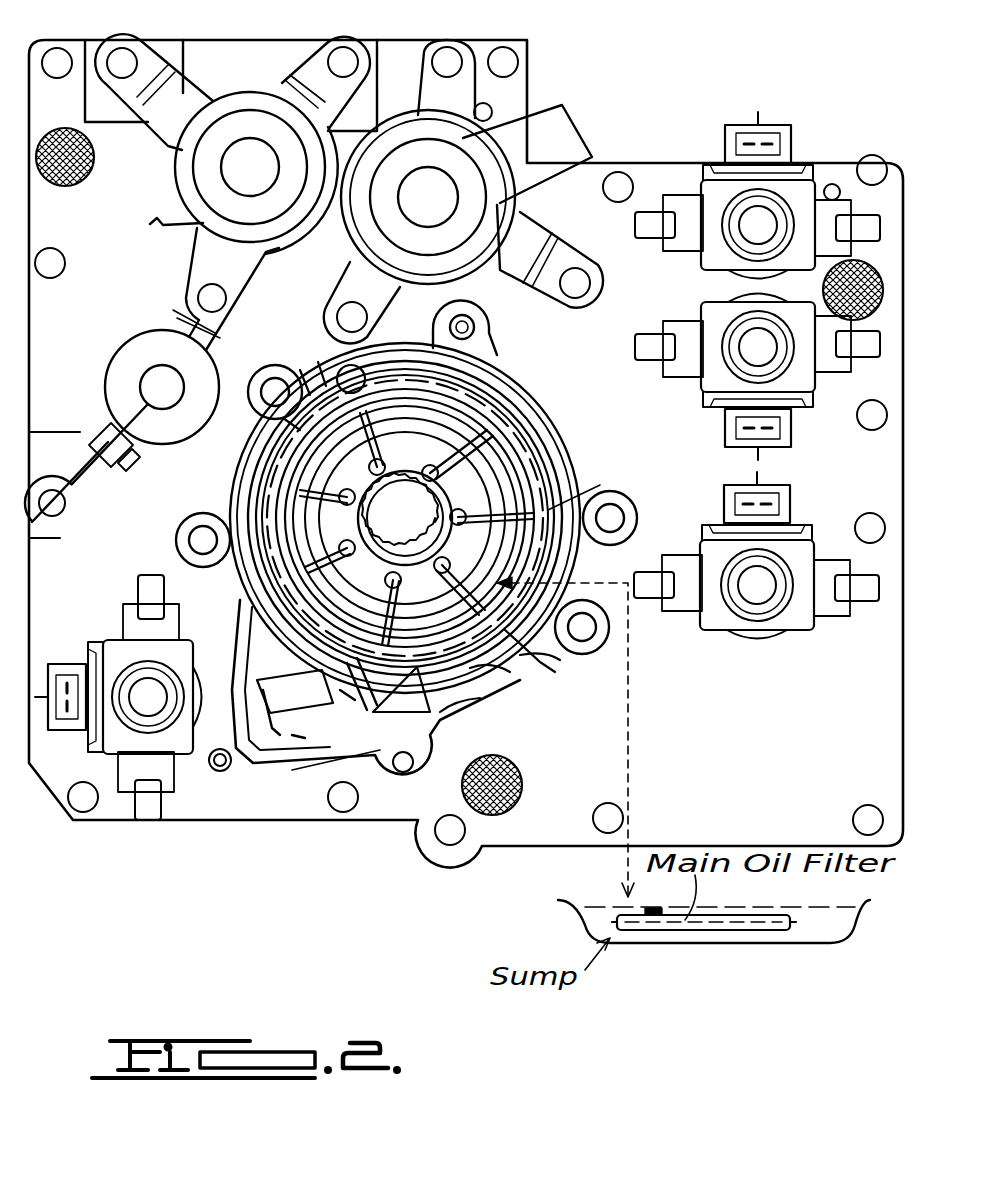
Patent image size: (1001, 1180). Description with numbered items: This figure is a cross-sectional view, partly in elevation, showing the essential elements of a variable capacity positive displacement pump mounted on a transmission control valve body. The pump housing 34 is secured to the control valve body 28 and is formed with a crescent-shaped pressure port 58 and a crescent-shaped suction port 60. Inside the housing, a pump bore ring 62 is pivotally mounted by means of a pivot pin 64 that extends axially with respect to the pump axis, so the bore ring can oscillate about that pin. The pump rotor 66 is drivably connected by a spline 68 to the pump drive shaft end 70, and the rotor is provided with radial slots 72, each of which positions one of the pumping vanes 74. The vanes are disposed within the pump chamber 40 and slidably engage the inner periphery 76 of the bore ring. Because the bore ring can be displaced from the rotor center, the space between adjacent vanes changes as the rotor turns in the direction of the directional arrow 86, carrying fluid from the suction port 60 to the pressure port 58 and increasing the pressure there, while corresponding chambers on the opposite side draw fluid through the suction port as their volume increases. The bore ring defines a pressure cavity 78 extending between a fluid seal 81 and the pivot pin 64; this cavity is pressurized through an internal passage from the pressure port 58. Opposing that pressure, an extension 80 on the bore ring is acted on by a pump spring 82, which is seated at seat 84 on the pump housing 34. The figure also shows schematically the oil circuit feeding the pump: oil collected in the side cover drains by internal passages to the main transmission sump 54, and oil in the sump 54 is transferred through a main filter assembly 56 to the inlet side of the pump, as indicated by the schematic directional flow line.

The control valve body 28 is at (602, 756).
The pump housing 34 is at (435, 344).
The pump chamber 40 is at (530, 660).
The main transmission sump 54 is at (755, 935).
The main filter assembly 56 is at (663, 930).
The pressure port 58 is at (437, 417).
The suction port 60 is at (406, 620).
The pump bore ring 62 is at (518, 440).
The pivot pin 64 is at (347, 368).
The pump rotor 66 is at (482, 472).
The spline 68 is at (405, 518).
The pump drive shaft end 70 is at (373, 514).
The radial slots 72 is at (370, 468).
The pumping vanes 74 is at (333, 355).
The inner periphery 76 is at (482, 430).
The pressure cavity 78 is at (557, 653).
The extension 80 is at (443, 710).
The fluid seal 81 is at (480, 673).
The pump spring 82 is at (287, 733).
The spring seat 84 is at (267, 733).
The directional arrow 86 is at (295, 622).